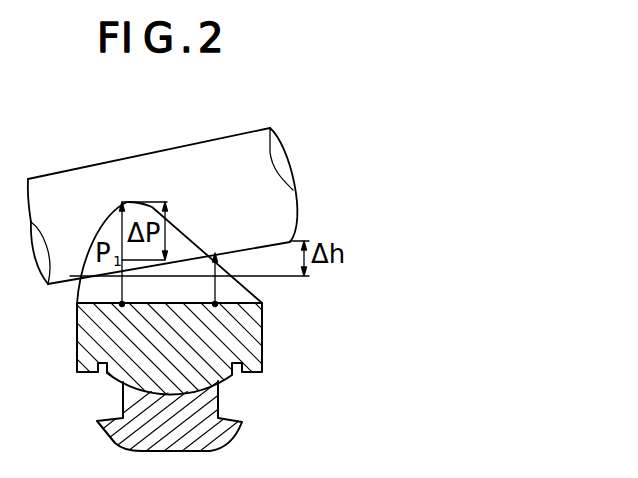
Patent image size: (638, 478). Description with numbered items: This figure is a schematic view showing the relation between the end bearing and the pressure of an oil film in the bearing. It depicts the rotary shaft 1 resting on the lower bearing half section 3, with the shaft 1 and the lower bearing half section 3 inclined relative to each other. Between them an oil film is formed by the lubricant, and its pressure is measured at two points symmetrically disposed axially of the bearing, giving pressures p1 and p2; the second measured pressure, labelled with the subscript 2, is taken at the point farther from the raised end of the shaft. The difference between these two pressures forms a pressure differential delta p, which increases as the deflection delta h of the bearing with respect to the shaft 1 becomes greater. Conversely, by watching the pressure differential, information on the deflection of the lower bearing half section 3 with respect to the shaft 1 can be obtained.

The rotary shaft 1 is at (235, 138).
The pitch P2 dimension 2 is at (201, 280).
The lower bearing half section 3 is at (266, 350).